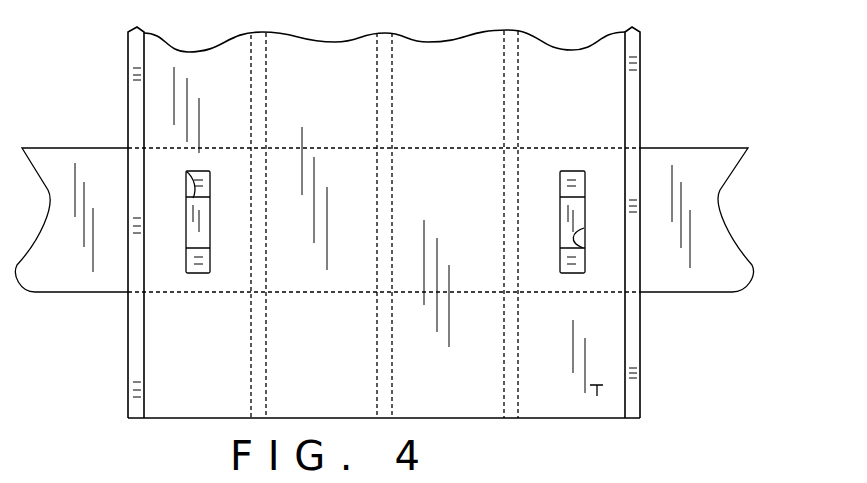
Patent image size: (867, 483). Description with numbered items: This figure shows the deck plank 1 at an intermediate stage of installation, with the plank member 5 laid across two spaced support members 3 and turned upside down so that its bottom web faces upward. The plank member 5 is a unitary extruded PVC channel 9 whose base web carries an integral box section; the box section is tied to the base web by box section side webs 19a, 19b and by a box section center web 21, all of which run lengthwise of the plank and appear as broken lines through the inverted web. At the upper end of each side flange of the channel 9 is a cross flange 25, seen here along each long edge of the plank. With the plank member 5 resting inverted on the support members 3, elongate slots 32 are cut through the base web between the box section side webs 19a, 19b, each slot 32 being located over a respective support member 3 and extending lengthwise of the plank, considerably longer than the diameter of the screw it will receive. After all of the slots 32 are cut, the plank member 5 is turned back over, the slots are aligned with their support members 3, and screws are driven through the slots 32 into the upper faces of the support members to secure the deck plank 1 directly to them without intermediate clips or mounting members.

The deck plank 1 is at (668, 51).
The support member 3 is at (690, 147).
The plank member 5 is at (596, 398).
The channel 9 is at (484, 426).
The box section side web 19a is at (520, 80).
The box section side web 19b is at (248, 90).
The box section center web 21 is at (393, 78).
The cross flange 25 is at (656, 381).
The slot 32 is at (186, 171).